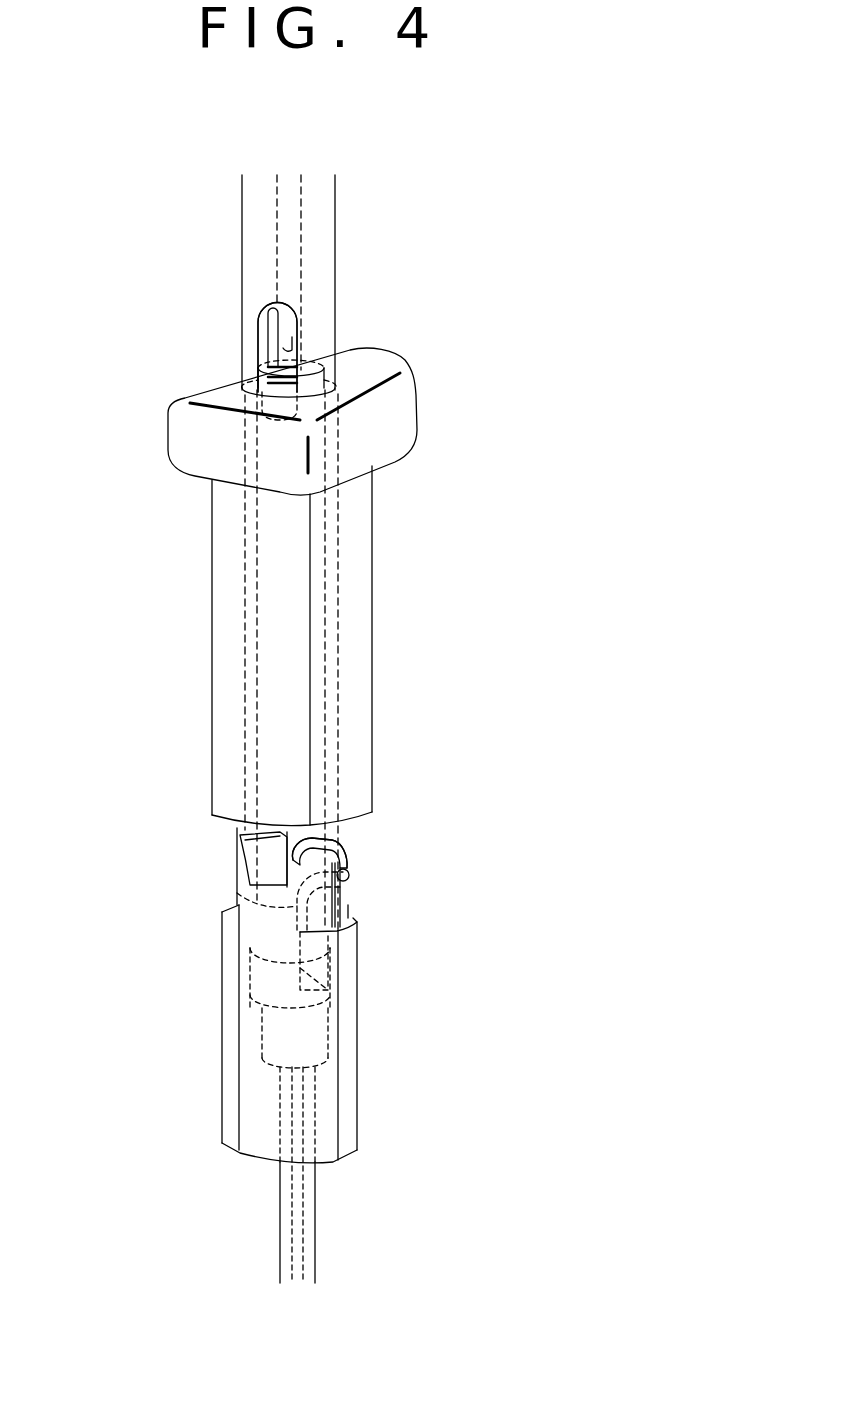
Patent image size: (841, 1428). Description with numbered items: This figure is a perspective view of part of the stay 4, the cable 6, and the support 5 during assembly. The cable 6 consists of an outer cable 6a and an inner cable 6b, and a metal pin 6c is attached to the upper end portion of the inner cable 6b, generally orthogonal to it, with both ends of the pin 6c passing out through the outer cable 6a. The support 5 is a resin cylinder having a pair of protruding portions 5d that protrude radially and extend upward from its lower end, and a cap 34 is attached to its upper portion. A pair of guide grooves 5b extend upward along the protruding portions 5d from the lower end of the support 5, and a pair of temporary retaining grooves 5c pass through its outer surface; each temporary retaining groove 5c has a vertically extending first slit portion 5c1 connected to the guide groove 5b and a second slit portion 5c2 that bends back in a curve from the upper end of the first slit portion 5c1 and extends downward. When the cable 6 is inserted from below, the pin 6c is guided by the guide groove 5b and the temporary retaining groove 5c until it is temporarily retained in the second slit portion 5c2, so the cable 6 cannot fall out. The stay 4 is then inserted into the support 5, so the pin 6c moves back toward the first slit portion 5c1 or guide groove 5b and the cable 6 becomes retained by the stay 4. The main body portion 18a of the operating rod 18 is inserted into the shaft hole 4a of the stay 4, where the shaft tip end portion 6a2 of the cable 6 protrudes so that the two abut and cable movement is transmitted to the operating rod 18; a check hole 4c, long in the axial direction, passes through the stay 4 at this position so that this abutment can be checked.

The stay 4 is at (233, 268).
The shaft hole 4a is at (290, 245).
The check hole 4c is at (292, 343).
The main body portion 18a is at (277, 302).
The operating rod 18 is at (277, 348).
The shaft tip end portion 6a2 is at (255, 367).
The cap 34 is at (400, 408).
The support 5 is at (230, 883).
The second slit portion 5c2 is at (332, 841).
The first slit portion 5c1 is at (350, 854).
The temporary retaining groove 5c is at (319, 853).
The pin 6c is at (350, 878).
The guide groove 5b is at (330, 1013).
The protruding portion 5d is at (350, 1103).
The cable 6 is at (294, 1175).
The outer cable 6a is at (310, 1187).
The inner cable 6b is at (297, 1217).